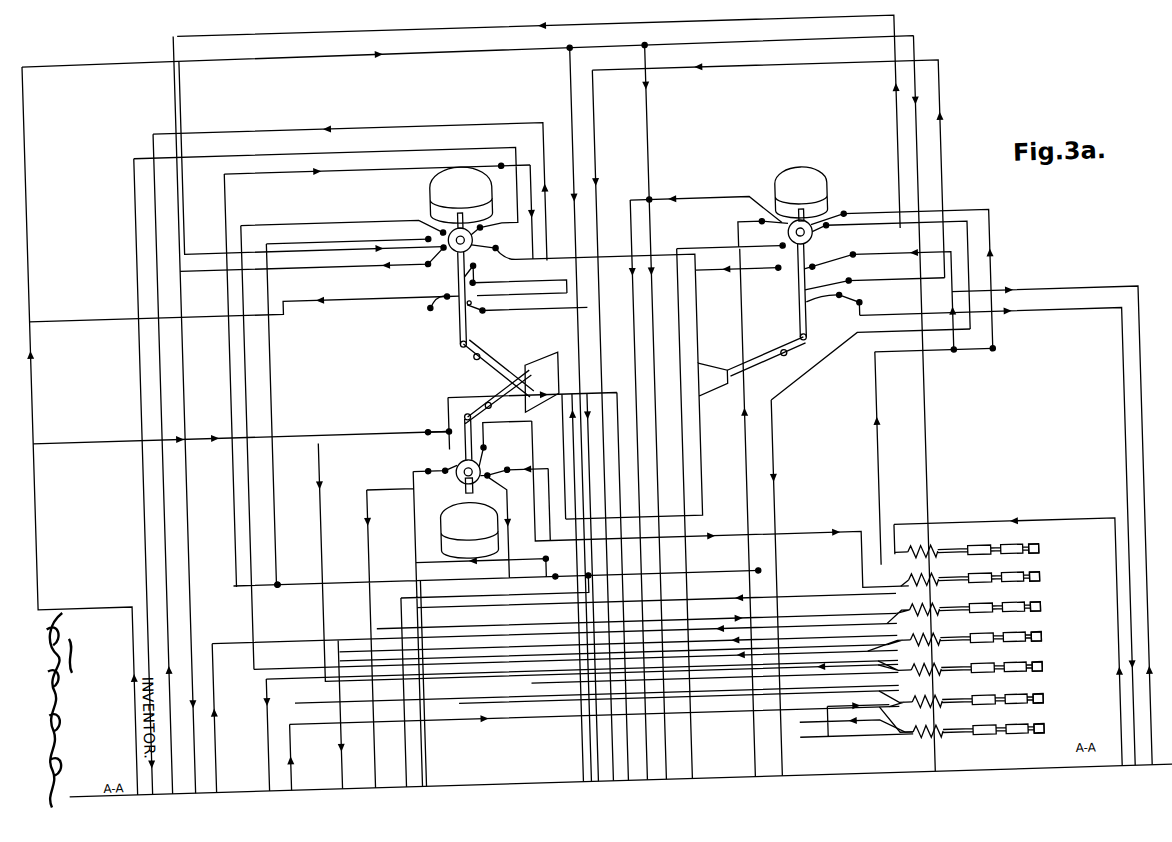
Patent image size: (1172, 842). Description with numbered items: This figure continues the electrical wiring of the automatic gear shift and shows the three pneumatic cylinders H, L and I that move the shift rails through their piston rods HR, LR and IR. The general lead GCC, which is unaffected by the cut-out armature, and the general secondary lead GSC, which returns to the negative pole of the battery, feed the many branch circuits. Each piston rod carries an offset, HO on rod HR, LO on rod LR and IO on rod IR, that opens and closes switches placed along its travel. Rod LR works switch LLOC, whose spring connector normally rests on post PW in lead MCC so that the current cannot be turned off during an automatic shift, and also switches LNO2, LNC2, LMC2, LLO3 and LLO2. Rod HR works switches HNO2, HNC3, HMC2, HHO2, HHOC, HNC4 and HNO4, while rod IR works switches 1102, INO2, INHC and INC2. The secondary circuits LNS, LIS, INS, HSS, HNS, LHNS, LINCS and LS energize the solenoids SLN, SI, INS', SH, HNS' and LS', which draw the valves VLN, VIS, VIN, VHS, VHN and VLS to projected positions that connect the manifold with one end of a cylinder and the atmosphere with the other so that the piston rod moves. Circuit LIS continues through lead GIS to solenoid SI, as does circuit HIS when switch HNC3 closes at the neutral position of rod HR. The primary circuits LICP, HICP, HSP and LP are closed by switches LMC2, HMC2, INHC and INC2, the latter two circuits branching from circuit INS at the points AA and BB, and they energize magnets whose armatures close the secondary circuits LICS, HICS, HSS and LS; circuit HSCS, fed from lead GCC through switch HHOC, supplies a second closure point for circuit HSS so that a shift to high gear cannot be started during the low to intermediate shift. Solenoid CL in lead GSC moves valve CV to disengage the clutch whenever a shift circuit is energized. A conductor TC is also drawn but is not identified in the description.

The general lead GCC is at (469, 410).
The secondary circuit LS is at (566, 396).
The secondary circuit LINCS is at (773, 400).
The primary circuit HICP is at (372, 420).
The circuit HIS is at (513, 458).
The secondary circuit HNS is at (556, 473).
The secondary circuit HSCS is at (465, 539).
The secondary circuit HICS is at (319, 600).
The secondary circuit LICS is at (370, 583).
The primary circuit LICP is at (666, 412).
The circuit LIS is at (709, 479).
The secondary circuit HSS is at (622, 586).
The tie conductor TC is at (646, 440).
The secondary circuit LNS is at (867, 552).
The secondary circuit INS is at (663, 587).
The primary circuit LP is at (498, 626).
The secondary circuit LHNS is at (571, 616).
The primary circuit HSP is at (591, 620).
The lead MCC is at (1007, 527).
The general secondary lead GSC is at (964, 636).
The lead GIS is at (856, 730).
The pneumatic cylinder H is at (426, 209).
The offset HO is at (454, 249).
The piston rod HR is at (450, 350).
The switch HNO4 is at (348, 404).
The switch HNC4 is at (314, 268).
The switch HNC3 is at (495, 233).
The switch HNO2 is at (583, 257).
The switch HMC2 is at (515, 279).
The switch HHO2 is at (527, 314).
The switch HHOC is at (426, 313).
The pneumatic cylinder L is at (823, 207).
The offset LO is at (780, 258).
The piston rod LR is at (790, 325).
The switch LNC2 is at (755, 235).
The switch LNO2 is at (903, 275).
The switch LLO3 is at (881, 295).
The switch LLO2 is at (874, 277).
The switch LLOC is at (866, 303).
The post PW is at (826, 325).
The switch LMC2 is at (738, 275).
The pneumatic cylinder I is at (468, 518).
The offset IO is at (450, 494).
The piston rod IR is at (440, 420).
The switch 1102 is at (430, 427).
The switch INC2 is at (436, 470).
The switch INO2 is at (505, 444).
The switch INHC is at (514, 464).
The branch point AA is at (536, 484).
The branch point BB is at (555, 558).
The solenoid CL is at (912, 568).
The valve CV is at (1046, 547).
The solenoid INS' is at (970, 572).
The valve VIN is at (1047, 575).
The solenoid LS' is at (963, 606).
The valve VLS is at (1049, 605).
The solenoid HNS' is at (954, 635).
The valve VHN is at (1052, 635).
The solenoid SH is at (960, 663).
The valve VHS is at (1052, 665).
The solenoid SI is at (961, 695).
The valve VIS is at (1051, 697).
The solenoid SLN is at (961, 720).
The valve VLN is at (1054, 727).